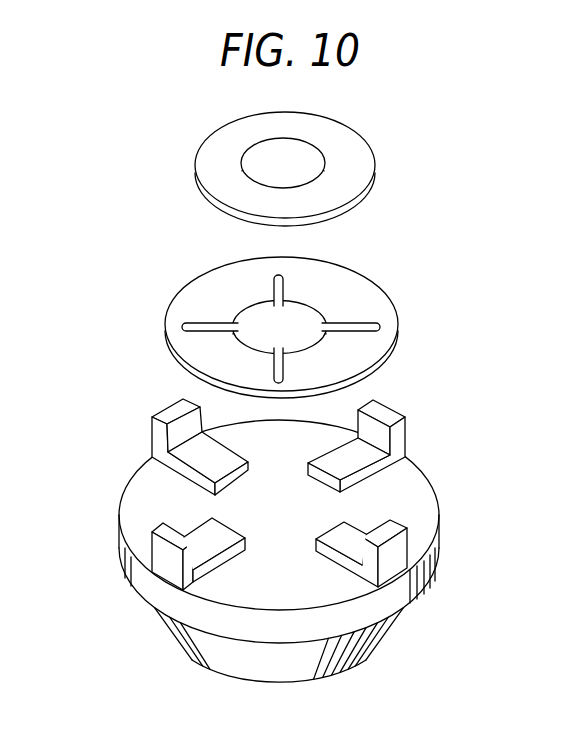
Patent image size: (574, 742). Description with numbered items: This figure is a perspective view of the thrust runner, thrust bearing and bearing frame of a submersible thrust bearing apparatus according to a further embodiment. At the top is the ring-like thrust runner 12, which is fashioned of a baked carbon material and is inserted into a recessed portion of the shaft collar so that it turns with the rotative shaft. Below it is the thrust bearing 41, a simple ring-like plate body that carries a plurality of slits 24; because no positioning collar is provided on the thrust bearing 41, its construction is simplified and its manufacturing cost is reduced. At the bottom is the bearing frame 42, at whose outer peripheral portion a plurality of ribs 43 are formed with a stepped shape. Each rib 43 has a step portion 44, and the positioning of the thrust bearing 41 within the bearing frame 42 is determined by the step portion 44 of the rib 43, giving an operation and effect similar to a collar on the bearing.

The thrust runner 12 is at (213, 162).
The thrust bearing 41 is at (198, 293).
The slits 24 is at (190, 323).
The bearing frame 42 is at (133, 568).
The rib 43 is at (362, 457).
The step portion 44 is at (155, 430).